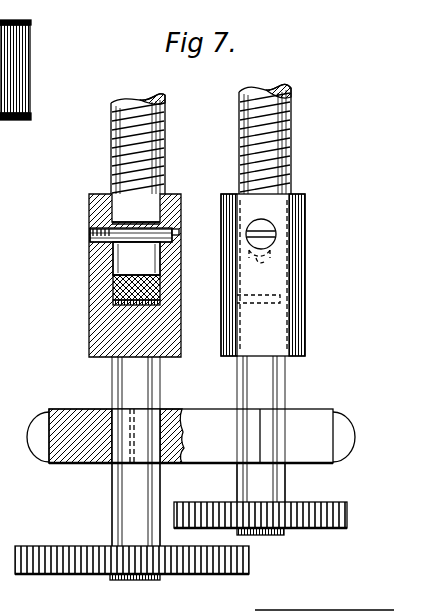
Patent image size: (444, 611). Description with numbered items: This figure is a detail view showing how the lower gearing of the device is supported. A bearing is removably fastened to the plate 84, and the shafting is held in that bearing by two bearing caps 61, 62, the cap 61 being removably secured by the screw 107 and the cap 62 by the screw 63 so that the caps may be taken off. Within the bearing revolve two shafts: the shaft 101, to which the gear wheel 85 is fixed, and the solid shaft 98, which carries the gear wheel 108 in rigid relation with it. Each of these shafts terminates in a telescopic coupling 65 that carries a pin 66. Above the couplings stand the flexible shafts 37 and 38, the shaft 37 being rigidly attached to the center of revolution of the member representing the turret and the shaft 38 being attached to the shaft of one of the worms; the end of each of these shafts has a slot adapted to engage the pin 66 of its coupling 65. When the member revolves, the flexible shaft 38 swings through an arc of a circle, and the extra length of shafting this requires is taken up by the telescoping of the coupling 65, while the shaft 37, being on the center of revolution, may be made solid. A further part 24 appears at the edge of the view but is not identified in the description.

The flexible shaft 37 is at (291, 132).
The flexible shaft 38 is at (165, 137).
The bearing cap 61 is at (98, 458).
The bearing cap 62 is at (191, 436).
The screw 63 is at (349, 424).
The telescopic coupling 65 is at (235, 323).
The pin 66 is at (178, 229).
The plate 84 is at (331, 610).
The gear wheel 85 is at (312, 518).
The solid shaft 98 is at (112, 523).
The shaft 101 is at (272, 486).
The screw 107 is at (33, 432).
The gear wheel 108 is at (84, 568).
The frame 24 is at (5, 504).